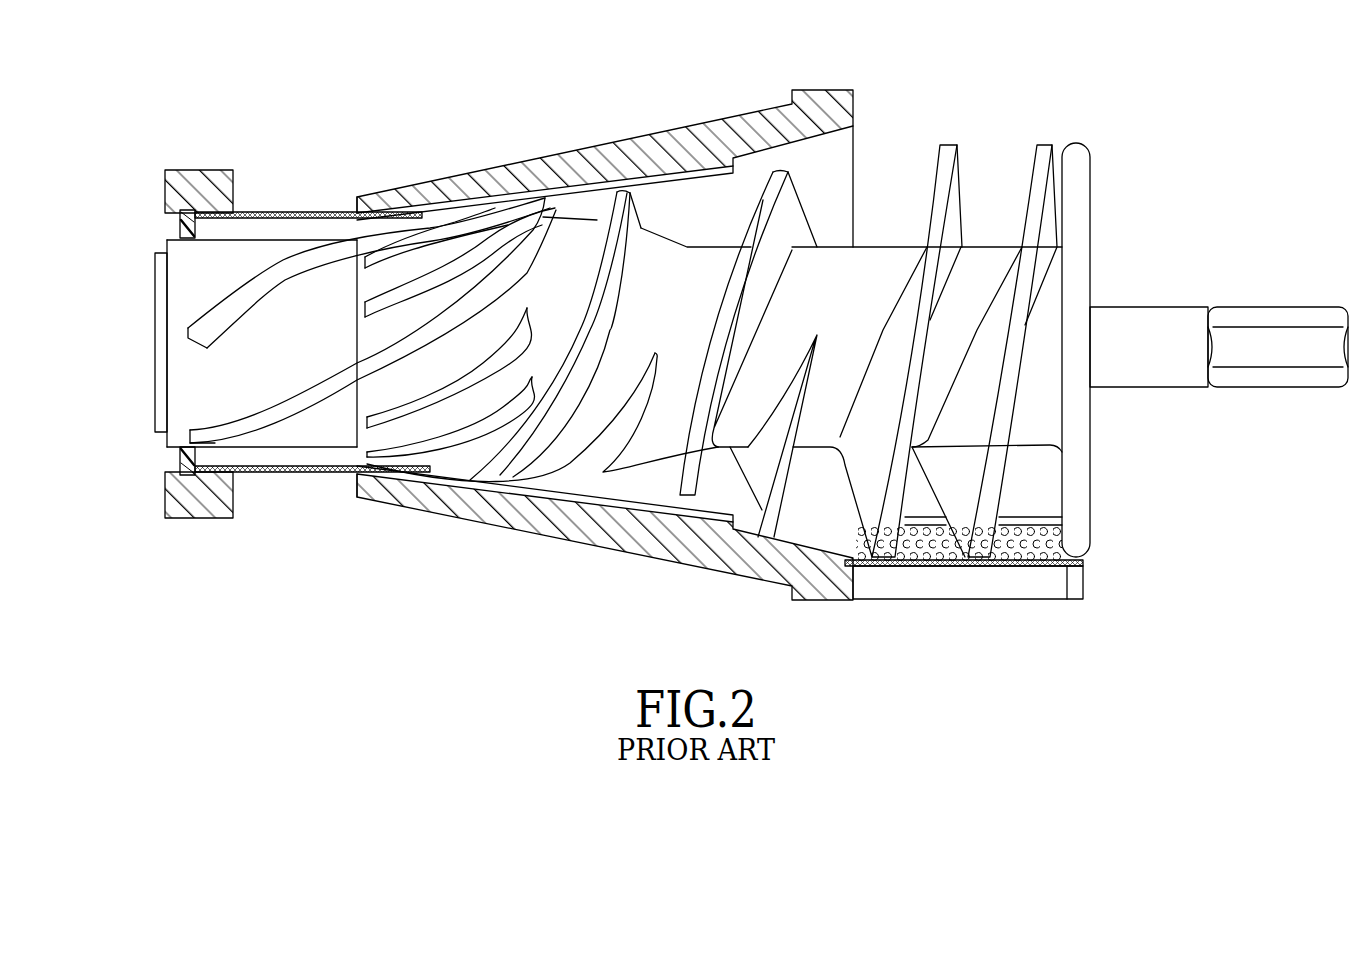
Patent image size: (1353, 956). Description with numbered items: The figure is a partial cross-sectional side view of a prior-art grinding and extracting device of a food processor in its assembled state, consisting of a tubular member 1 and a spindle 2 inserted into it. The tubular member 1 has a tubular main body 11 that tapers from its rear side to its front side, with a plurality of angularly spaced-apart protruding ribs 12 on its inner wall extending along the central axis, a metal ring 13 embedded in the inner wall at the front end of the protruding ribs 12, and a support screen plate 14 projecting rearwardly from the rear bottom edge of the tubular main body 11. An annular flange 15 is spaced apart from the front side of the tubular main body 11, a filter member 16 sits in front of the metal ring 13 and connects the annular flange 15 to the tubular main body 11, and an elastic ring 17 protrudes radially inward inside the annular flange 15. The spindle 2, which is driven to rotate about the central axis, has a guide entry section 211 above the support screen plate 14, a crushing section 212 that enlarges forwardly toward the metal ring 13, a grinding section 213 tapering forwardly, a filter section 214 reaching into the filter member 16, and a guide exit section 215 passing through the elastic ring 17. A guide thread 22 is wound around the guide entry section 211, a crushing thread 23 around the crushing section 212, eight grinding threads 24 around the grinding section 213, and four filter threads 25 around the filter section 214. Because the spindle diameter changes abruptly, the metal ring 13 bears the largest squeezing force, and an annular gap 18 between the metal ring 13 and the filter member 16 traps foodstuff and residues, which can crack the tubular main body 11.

The tubular member 1 is at (558, 111).
The tubular main body 11 is at (626, 140).
The protruding ribs 12 is at (690, 170).
The metal ring 13 is at (487, 250).
The support screen plate 14 is at (1027, 560).
The annular flange 15 is at (197, 183).
The filter member 16 is at (273, 213).
The elastic ring 17 is at (180, 228).
The annular gap 18 is at (450, 186).
The spindle 2 is at (1170, 242).
The guide entry section 211 is at (982, 305).
The crushing section 212 is at (643, 257).
The grinding section 213 is at (437, 288).
The filter section 214 is at (313, 293).
The guide exit section 215 is at (180, 305).
The guide thread 22 is at (1037, 170).
The crushing thread 23 is at (567, 410).
The grinding threads 24 is at (432, 330).
The filter threads 25 is at (245, 298).